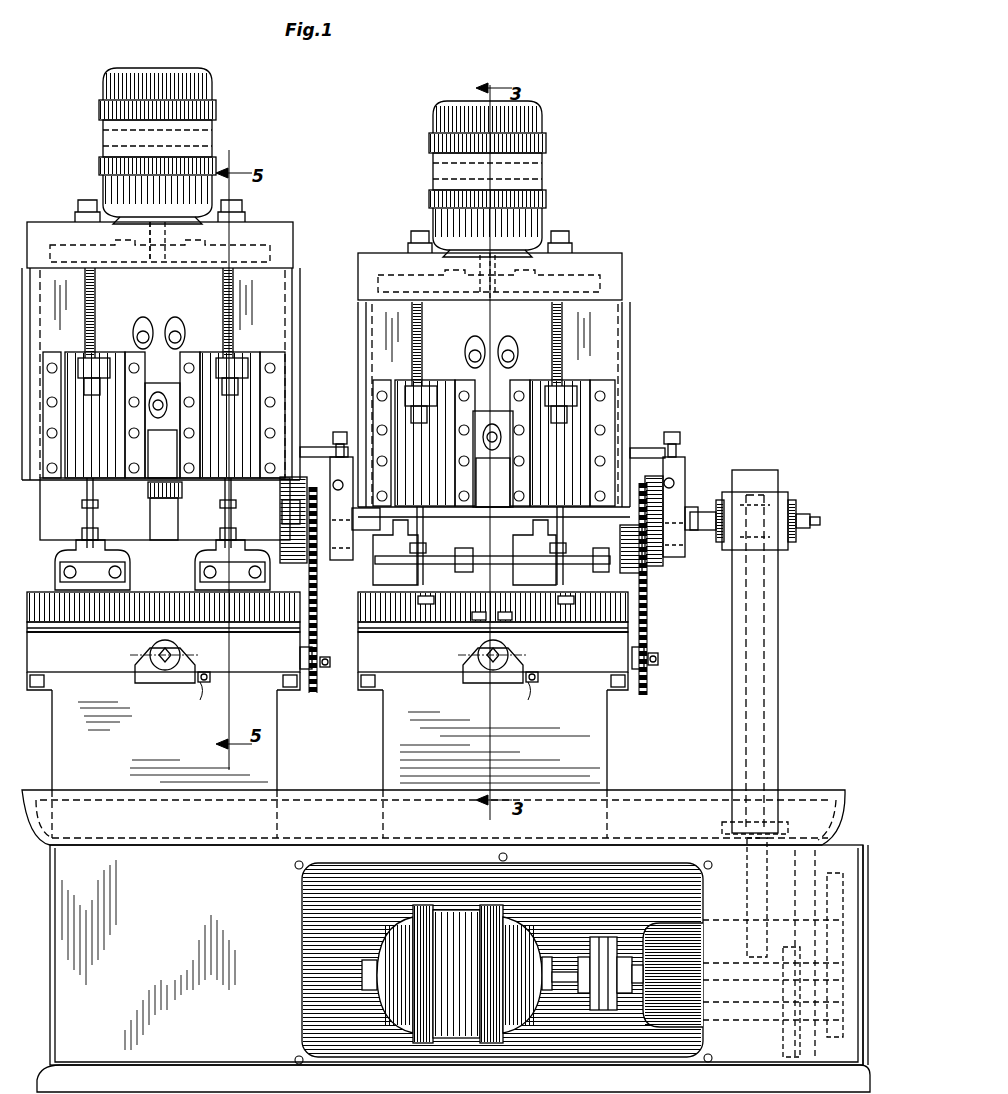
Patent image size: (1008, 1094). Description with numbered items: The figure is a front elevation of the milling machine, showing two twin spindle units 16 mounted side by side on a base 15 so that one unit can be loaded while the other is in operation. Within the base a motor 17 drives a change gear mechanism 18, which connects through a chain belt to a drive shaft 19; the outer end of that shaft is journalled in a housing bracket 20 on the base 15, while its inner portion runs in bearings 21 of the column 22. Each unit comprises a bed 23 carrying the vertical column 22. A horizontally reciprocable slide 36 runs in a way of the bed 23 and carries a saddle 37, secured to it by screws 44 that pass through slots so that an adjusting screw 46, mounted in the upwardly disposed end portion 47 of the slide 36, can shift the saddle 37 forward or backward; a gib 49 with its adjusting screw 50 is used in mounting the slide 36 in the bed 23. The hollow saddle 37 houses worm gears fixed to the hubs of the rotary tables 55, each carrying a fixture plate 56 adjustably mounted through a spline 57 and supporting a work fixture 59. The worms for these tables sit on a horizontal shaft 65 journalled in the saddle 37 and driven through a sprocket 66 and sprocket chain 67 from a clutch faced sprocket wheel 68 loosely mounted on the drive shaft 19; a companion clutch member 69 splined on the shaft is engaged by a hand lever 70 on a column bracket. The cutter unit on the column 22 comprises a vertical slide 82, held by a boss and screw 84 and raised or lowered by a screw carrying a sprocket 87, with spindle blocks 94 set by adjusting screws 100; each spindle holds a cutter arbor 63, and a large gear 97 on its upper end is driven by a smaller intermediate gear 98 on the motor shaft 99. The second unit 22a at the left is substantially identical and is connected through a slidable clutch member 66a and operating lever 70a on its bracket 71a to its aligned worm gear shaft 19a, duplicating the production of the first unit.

The base 15 is at (453, 965).
The unit 16 is at (300, 356).
The motor 17 is at (502, 974).
The change gear mechanism 18 is at (517, 960).
The drive shaft 19 is at (385, 516).
The worm gear shaft 19a is at (286, 520).
The housing bracket 20 is at (779, 640).
The bearings 21 is at (648, 576).
The column 22 is at (632, 323).
The second unit 22a is at (298, 300).
The bed 23 is at (329, 740).
The slide 36 is at (168, 682).
The saddle 37 is at (122, 628).
The screw 44 is at (478, 620).
The adjusting screw 46 is at (180, 650).
The upwardly disposed end portion 47 is at (152, 654).
The gib 49 is at (374, 703).
The adjusting screw 50 is at (212, 678).
The rotary table 55 is at (92, 618).
The fixture plate 56 is at (327, 612).
The spline 57 is at (428, 604).
The fixture 59 is at (162, 565).
The cutter arbor 63 is at (82, 525).
The horizontal shaft 65 is at (332, 664).
The sprocket 66 is at (314, 690).
The slidable clutch member 66a is at (310, 555).
The sprocket chain 67 is at (318, 620).
The clutch faced sprocket wheel 68 is at (650, 485).
The clutch member 69 is at (660, 520).
The hand lever 70 is at (682, 478).
The operating lever 70a is at (331, 478).
The bracket 71a is at (340, 447).
The vertical slide 82 is at (329, 468).
The screw 84 is at (329, 445).
The sprocket 87 is at (180, 492).
The spindle block 94 is at (329, 429).
The gear 97 is at (250, 250).
The intermediate gear 98 is at (143, 252).
The motor shaft 99 is at (325, 259).
The adjusting screw 100 is at (582, 346).